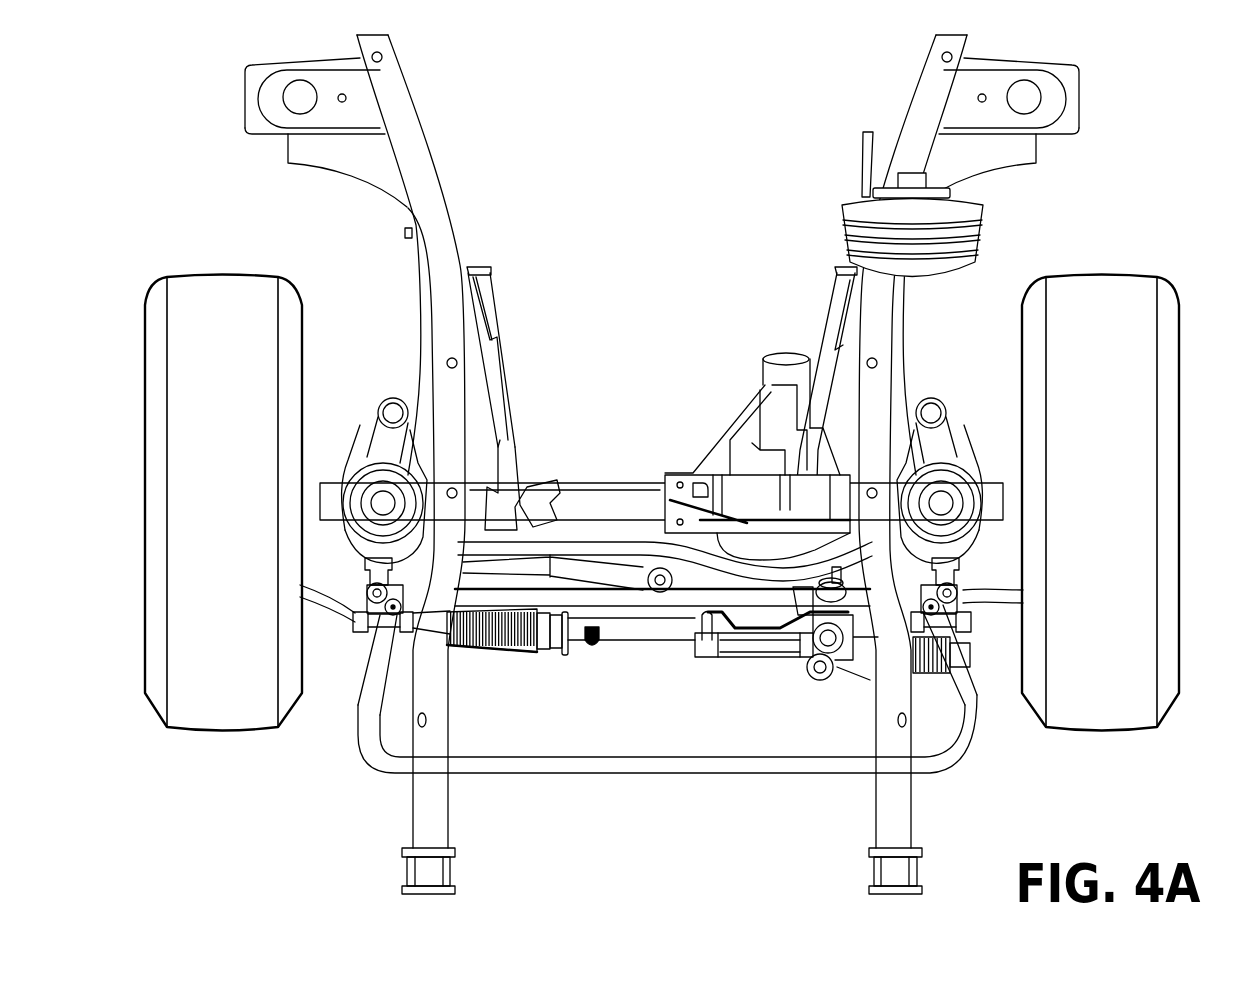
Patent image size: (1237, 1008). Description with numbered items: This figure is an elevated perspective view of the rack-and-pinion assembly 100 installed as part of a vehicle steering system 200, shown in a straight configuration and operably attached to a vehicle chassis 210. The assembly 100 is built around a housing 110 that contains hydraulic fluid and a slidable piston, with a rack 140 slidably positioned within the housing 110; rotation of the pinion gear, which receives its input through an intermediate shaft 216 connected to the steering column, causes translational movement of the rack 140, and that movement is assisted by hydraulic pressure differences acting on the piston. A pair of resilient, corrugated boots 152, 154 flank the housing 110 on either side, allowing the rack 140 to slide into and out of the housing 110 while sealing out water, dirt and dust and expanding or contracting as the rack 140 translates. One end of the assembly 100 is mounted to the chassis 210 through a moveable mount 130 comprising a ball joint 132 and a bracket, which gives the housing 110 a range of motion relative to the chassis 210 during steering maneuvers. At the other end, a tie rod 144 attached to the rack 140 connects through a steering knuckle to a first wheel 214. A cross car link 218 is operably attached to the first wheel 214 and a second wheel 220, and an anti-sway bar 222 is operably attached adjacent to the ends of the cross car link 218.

The assembly 100 is at (661, 617).
The housing 110 is at (769, 644).
The moveable mount 130 is at (845, 677).
The ball joint 132 is at (804, 673).
The rack 140 is at (752, 680).
The tie rod 144 is at (328, 686).
The boot 152 is at (490, 662).
The boot 154 is at (979, 689).
The vehicle steering system 200 is at (665, 696).
The vehicle chassis 210 is at (938, 464).
The first wheel 214 is at (245, 470).
The intermediate shaft 216 is at (670, 331).
The cross car link 218 is at (662, 655).
The second wheel 220 is at (1096, 465).
The anti-sway bar 222 is at (667, 774).